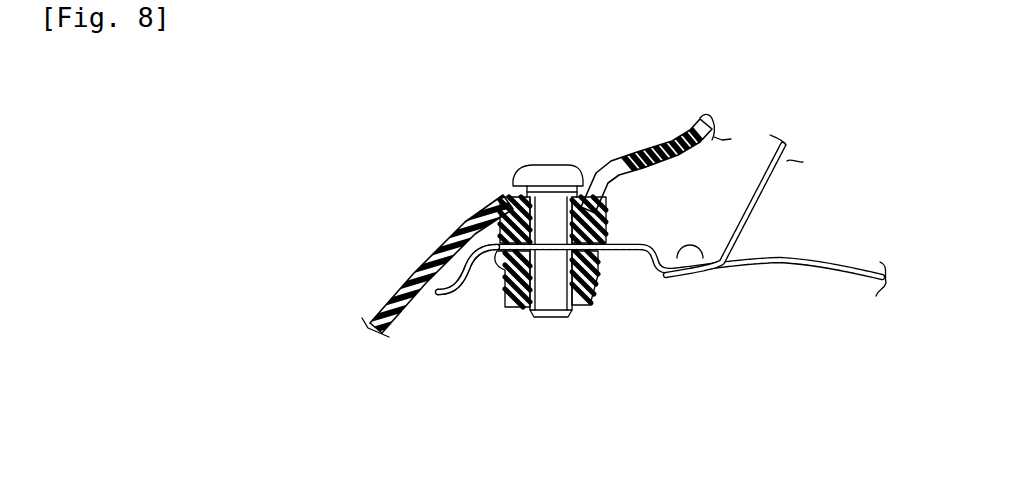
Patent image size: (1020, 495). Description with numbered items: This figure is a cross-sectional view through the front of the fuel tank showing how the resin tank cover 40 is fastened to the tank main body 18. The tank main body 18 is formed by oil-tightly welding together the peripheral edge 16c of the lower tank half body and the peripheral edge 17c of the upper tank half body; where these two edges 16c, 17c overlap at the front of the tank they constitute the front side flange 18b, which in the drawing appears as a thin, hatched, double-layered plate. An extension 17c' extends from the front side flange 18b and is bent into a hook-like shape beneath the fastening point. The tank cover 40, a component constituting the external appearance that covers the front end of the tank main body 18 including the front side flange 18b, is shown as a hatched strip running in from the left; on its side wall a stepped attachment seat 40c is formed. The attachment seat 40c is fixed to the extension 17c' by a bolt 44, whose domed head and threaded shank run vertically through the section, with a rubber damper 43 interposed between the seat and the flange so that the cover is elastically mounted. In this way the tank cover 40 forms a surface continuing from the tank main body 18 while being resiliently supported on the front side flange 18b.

The tank cover 40 is at (416, 234).
The attachment seat 40c is at (596, 190).
The bolt 44 is at (526, 166).
The rubber damper 43 is at (608, 220).
The extension 17c' is at (461, 326).
The peripheral edge of upper tank half body 17c is at (660, 317).
The peripheral edge of lower tank half body 16c is at (714, 279).
The front side flange 18b is at (660, 289).
The tank main body 18 is at (664, 289).